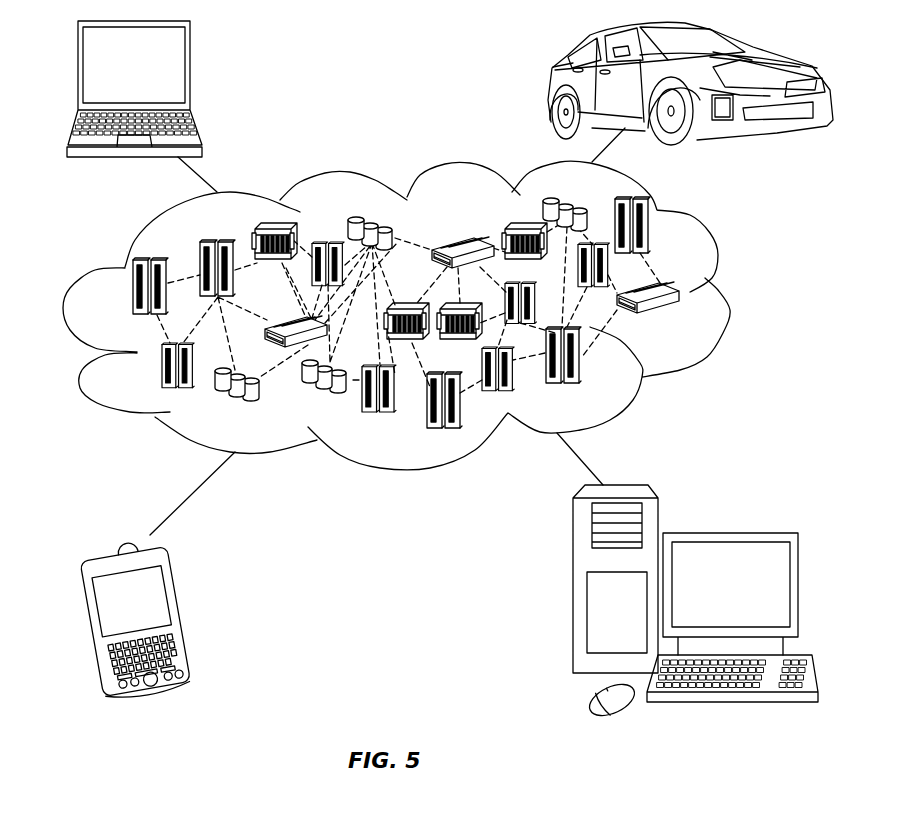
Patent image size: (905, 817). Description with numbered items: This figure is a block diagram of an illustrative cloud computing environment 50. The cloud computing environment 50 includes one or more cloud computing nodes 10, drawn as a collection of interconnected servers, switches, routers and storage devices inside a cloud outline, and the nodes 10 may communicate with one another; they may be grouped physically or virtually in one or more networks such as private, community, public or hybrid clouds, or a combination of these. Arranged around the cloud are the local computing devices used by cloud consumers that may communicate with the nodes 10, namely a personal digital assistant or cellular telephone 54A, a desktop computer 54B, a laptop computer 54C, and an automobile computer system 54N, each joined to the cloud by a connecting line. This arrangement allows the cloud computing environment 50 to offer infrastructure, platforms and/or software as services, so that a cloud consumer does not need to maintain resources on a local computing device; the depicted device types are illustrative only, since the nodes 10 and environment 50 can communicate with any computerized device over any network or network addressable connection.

The cloud computing nodes 10 is at (683, 320).
The cloud computing environment 50 is at (730, 292).
The personal digital assistant or cellular telephone 54A is at (182, 608).
The desktop computer 54B is at (730, 530).
The laptop computer 54C is at (192, 72).
The automobile computer system 54N is at (552, 82).